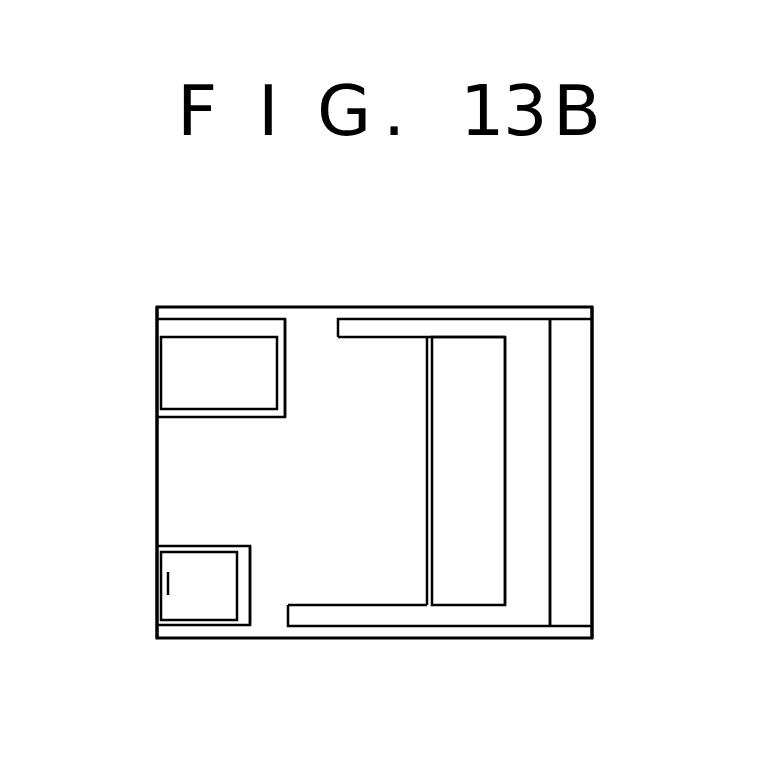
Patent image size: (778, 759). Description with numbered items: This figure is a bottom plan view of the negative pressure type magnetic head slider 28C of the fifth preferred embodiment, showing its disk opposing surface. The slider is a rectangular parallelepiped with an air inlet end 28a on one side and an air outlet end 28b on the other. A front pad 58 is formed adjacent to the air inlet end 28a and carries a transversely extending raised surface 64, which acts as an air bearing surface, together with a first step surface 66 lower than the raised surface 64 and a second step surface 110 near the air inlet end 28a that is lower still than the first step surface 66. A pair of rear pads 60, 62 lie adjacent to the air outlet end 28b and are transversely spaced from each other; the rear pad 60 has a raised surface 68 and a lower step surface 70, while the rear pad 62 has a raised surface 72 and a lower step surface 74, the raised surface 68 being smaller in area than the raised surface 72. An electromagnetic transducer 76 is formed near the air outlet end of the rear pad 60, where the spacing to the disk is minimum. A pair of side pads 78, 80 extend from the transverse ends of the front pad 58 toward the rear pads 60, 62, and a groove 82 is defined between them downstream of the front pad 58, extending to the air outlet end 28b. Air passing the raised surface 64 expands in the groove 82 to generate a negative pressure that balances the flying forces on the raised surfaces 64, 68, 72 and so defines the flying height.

The negative pressure type magnetic head slider 28C is at (518, 307).
The air inlet end 28a is at (597, 413).
The air outlet end 28b is at (155, 475).
The rear pad 62 is at (212, 319).
The raised surface 72 is at (177, 372).
The step surface 74 is at (283, 373).
The side pad 80 is at (368, 319).
The raised surface 64 is at (468, 597).
The groove 82 is at (355, 483).
The front pad 58 is at (550, 490).
The second step surface 110 is at (575, 363).
The first step surface 66 is at (535, 545).
The side pad 78 is at (355, 618).
The rear pad 60 is at (195, 625).
The raised surface 68 is at (202, 558).
The step surface 70 is at (245, 572).
The electromagnetic transducer 76 is at (157, 585).